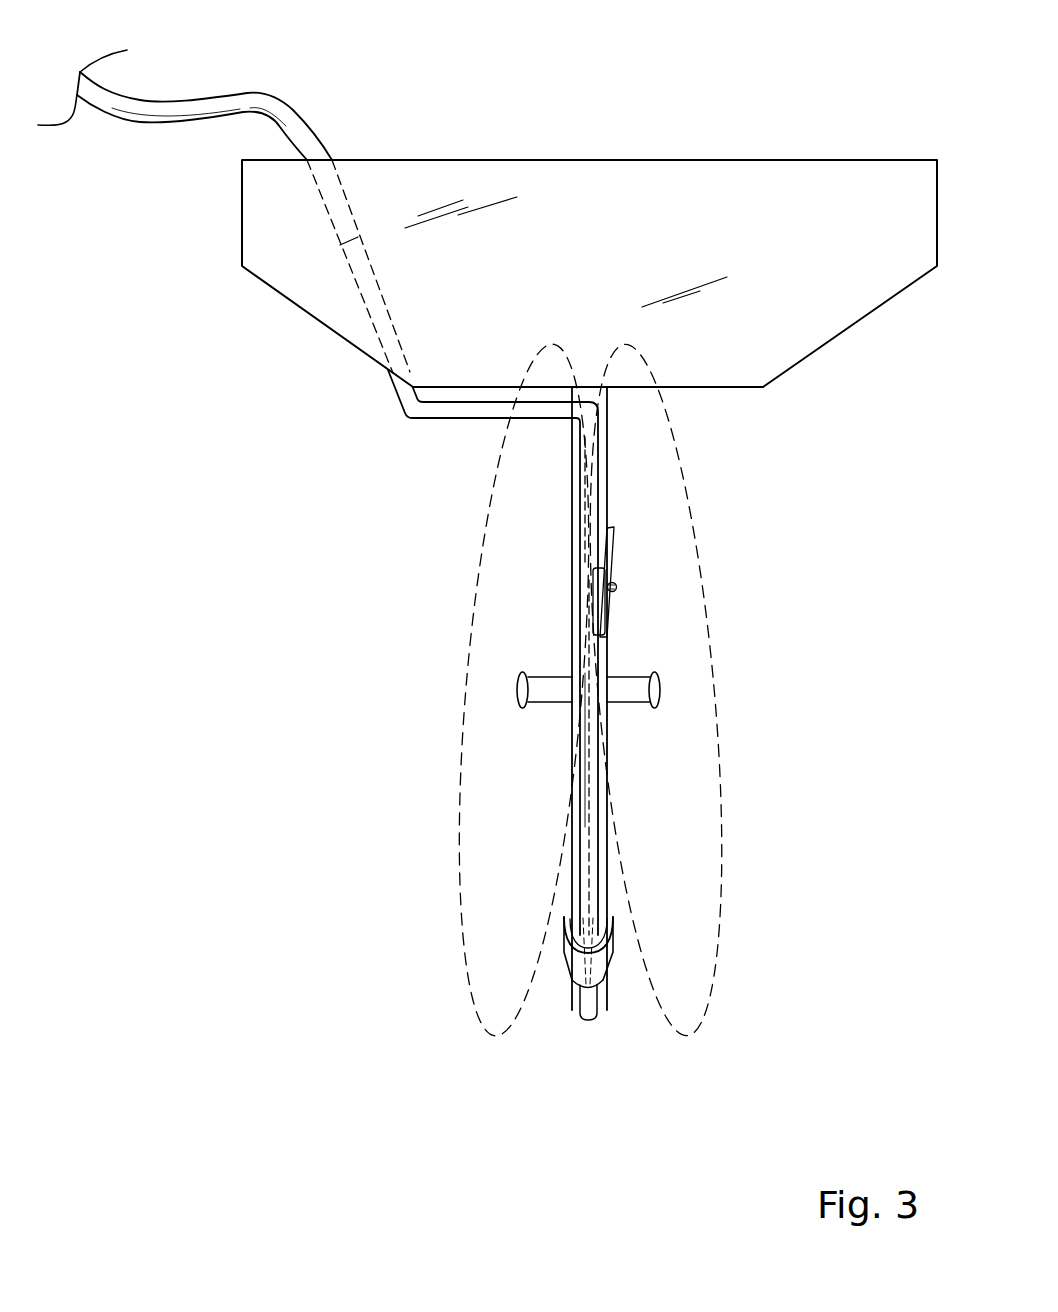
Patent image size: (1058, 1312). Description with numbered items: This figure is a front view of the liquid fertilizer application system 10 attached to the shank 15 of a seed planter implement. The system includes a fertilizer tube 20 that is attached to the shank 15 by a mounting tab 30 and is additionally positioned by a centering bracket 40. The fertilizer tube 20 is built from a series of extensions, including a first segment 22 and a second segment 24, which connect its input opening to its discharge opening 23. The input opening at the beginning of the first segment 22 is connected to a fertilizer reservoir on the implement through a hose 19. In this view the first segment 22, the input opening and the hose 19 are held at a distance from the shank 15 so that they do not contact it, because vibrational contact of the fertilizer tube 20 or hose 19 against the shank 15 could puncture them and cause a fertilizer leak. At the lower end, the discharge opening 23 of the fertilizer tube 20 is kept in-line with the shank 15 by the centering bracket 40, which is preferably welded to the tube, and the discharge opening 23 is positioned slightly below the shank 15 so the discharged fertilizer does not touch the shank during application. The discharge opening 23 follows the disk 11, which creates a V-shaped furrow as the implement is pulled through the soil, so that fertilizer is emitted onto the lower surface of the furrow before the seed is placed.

The liquid fertilizer application system 10 is at (786, 115).
The disk 11 is at (482, 815).
The shank 15 is at (592, 399).
The hose 19 is at (307, 135).
The fertilizer tube 20 is at (618, 779).
The first segment 22 is at (401, 388).
The discharge opening 23 is at (587, 1023).
The second segment 24 is at (453, 413).
The mounting tab 30 is at (624, 560).
The centering bracket 40 is at (636, 945).